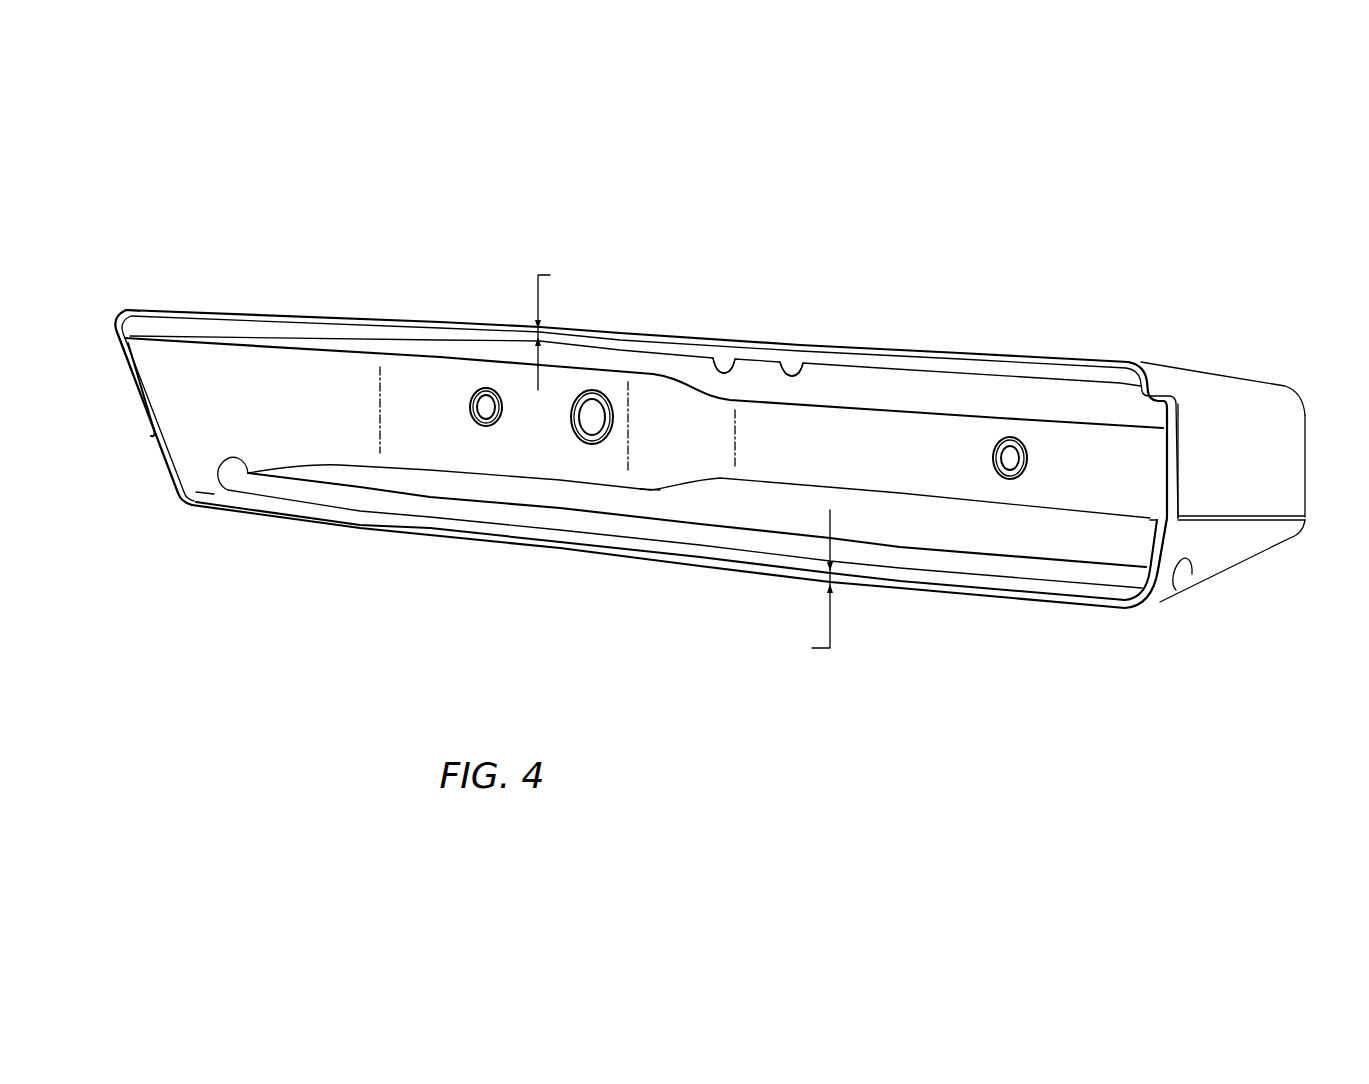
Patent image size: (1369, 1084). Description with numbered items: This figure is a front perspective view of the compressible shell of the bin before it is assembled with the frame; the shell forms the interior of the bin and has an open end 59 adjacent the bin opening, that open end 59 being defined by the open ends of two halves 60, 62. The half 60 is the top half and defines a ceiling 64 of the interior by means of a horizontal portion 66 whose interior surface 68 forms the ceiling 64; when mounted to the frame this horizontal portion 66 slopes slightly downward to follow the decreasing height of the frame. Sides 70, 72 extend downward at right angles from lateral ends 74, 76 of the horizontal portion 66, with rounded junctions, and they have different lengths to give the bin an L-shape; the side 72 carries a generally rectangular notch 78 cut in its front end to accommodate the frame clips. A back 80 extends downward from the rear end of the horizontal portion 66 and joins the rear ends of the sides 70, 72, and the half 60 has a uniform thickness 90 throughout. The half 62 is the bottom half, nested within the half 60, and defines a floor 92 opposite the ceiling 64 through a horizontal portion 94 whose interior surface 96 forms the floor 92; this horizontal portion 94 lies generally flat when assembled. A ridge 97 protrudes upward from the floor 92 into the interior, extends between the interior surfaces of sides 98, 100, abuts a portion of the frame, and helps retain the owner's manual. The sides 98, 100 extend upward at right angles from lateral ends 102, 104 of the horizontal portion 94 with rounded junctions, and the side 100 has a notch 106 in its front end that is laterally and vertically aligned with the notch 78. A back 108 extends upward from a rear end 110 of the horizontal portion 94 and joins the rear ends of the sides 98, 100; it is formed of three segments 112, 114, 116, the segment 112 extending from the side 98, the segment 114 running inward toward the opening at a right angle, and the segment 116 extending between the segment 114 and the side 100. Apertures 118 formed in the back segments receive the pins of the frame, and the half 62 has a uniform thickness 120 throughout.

The open end 59 is at (673, 439).
The half 60 is at (1218, 374).
The half 62 is at (1200, 580).
The ceiling 64 is at (805, 373).
The horizontal portion 66 is at (452, 322).
The interior surface 68 is at (736, 372).
The side 70 is at (121, 366).
The side 72 is at (1290, 438).
The lateral end 74 is at (121, 311).
The lateral end 76 is at (1133, 362).
The notch 78 is at (1172, 442).
The back 80 is at (983, 400).
The thickness 90 is at (559, 326).
The floor 92 is at (943, 537).
The horizontal portion 94 is at (798, 522).
The interior surface 96 is at (737, 512).
The ridge 97 is at (296, 484).
The side 98 is at (162, 450).
The side 100 is at (1233, 537).
The lateral end 102 is at (177, 504).
The lateral end 104 is at (1130, 615).
The notch 106 is at (1163, 479).
The back 108 is at (918, 450).
The rear end 110 is at (1058, 508).
The segment 112 is at (428, 443).
The segment 114 is at (672, 483).
The segment 116 is at (1140, 500).
The apertures 118 is at (583, 445).
The thickness 120 is at (800, 584).